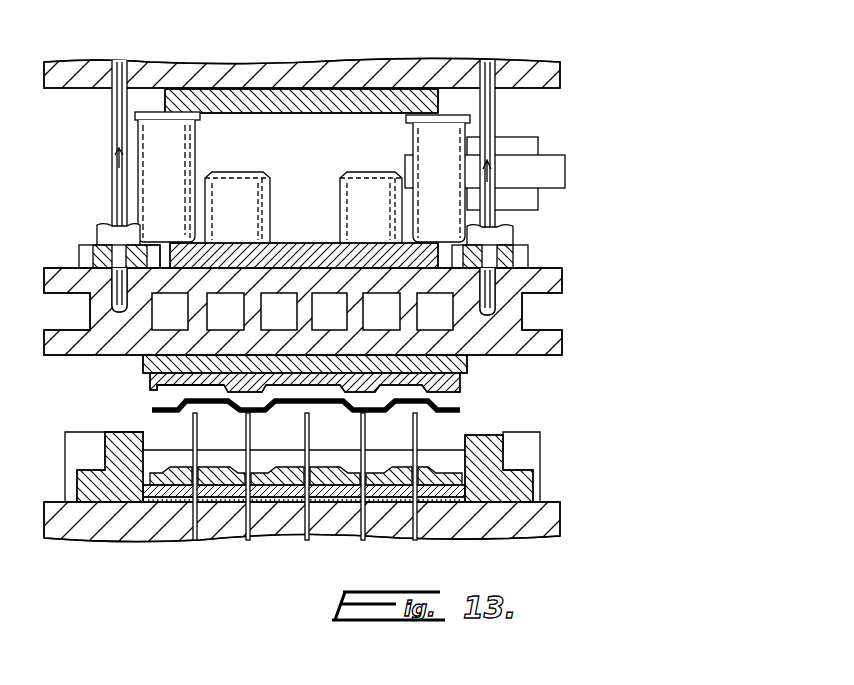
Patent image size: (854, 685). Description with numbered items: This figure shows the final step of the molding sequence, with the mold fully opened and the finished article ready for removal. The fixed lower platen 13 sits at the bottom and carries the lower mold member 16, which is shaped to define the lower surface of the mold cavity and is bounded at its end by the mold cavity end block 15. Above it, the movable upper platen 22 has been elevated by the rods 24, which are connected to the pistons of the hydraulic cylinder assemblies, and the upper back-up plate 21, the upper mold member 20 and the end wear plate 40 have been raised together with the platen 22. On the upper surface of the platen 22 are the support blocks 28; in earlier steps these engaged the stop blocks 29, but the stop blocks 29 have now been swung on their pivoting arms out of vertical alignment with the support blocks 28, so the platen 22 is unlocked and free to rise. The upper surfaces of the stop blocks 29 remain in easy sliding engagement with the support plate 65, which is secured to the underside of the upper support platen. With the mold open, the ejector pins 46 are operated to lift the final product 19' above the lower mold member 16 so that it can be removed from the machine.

The lower platen 13 is at (560, 505).
The mold cavity end block 15 is at (505, 456).
The lower mold member 16 is at (404, 487).
The final product 19' is at (338, 392).
The upper mold member 20 is at (154, 394).
The upper back-up plate 21 is at (170, 368).
The movable upper platen 22 is at (549, 348).
The rods 24 is at (114, 116).
The support blocks 28 is at (346, 191).
The stop blocks 29 is at (148, 150).
The end wear plate 40 is at (150, 373).
The ejector pins 46 is at (420, 425).
The support plate 65 is at (318, 92).